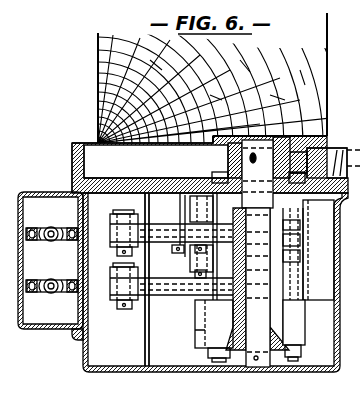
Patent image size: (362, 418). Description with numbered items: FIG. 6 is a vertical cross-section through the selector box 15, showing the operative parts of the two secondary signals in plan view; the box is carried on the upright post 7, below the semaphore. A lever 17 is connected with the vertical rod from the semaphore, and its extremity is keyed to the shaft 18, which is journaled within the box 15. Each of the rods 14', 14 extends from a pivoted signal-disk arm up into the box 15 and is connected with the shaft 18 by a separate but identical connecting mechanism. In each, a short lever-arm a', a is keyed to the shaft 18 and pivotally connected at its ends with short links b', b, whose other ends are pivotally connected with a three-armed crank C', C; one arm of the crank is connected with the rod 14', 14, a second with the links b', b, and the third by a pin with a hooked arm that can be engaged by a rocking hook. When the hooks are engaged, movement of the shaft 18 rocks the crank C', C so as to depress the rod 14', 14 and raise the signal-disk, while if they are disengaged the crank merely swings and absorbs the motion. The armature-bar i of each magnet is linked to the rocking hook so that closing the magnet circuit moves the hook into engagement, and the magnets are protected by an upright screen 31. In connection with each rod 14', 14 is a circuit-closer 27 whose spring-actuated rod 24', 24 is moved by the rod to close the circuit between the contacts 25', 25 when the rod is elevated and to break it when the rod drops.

The upright post 7 is at (230, 71).
The selector box 15 is at (210, 164).
The lever 17 is at (300, 160).
The shaft 18 is at (259, 252).
The rod 14' is at (114, 233).
The rod 14 is at (114, 286).
The three-armed crank C' is at (171, 233).
The three-armed crank C is at (171, 286).
The short link b' is at (208, 212).
The short link b is at (199, 263).
The short lever-arm a' is at (303, 228).
The short lever-arm a is at (303, 305).
The armature-bar i is at (298, 244).
The contacts 25' is at (53, 225).
The spring-actuated rod 24' is at (52, 241).
The contacts 25 is at (52, 278).
The spring-actuated rod 24 is at (52, 293).
The circuit-closer 27 is at (0, 343).
The upright screen 31 is at (150, 340).